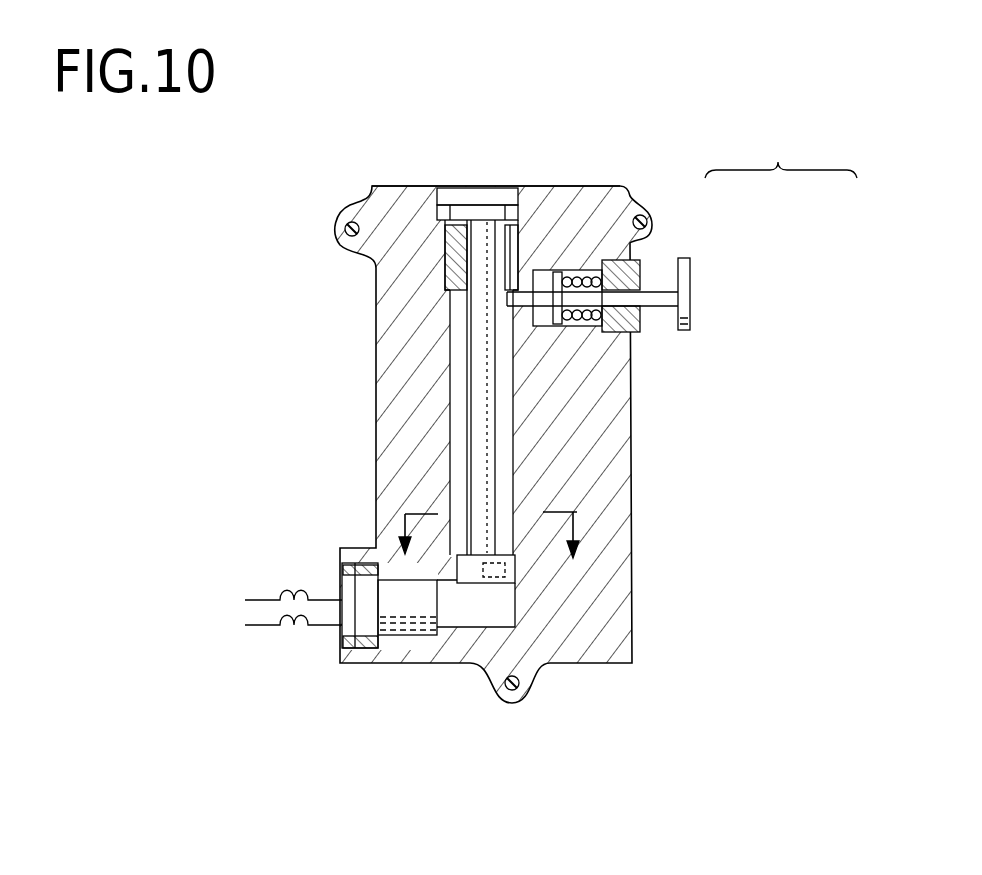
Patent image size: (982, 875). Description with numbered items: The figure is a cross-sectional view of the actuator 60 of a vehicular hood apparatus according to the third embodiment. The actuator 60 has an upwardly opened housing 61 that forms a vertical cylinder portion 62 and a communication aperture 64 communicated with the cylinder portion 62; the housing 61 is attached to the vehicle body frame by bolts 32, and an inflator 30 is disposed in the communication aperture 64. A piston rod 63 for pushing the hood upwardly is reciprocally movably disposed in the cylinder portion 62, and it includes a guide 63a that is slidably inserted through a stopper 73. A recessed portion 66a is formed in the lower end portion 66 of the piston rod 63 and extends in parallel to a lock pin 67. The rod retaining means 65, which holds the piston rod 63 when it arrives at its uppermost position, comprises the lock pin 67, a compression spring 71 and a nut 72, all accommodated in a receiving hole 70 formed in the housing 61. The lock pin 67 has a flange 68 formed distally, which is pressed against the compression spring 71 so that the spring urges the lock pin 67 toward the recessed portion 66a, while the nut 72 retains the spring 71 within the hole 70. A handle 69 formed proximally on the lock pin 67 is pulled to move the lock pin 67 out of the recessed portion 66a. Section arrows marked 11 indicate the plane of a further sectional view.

The actuator 60 is at (558, 183).
The housing 61 is at (397, 184).
The cylinder portion 62 is at (450, 327).
The piston rod 63 is at (468, 415).
The guide 63a is at (502, 370).
The communication aperture 64 is at (449, 624).
The rod retaining means 65 is at (695, 292).
The lower end portion 66 is at (492, 583).
The recessed portion 66a is at (493, 576).
The lock pin 67 is at (781, 151).
The flange 68 is at (547, 268).
The handle 69 is at (690, 277).
The receiving hole 70 is at (537, 268).
The compression spring 71 is at (577, 327).
The nut 72 is at (632, 322).
The stopper 73 is at (445, 258).
The inflator 30 is at (400, 637).
The bolts 32 is at (345, 228).
The section line 11 is at (570, 478).